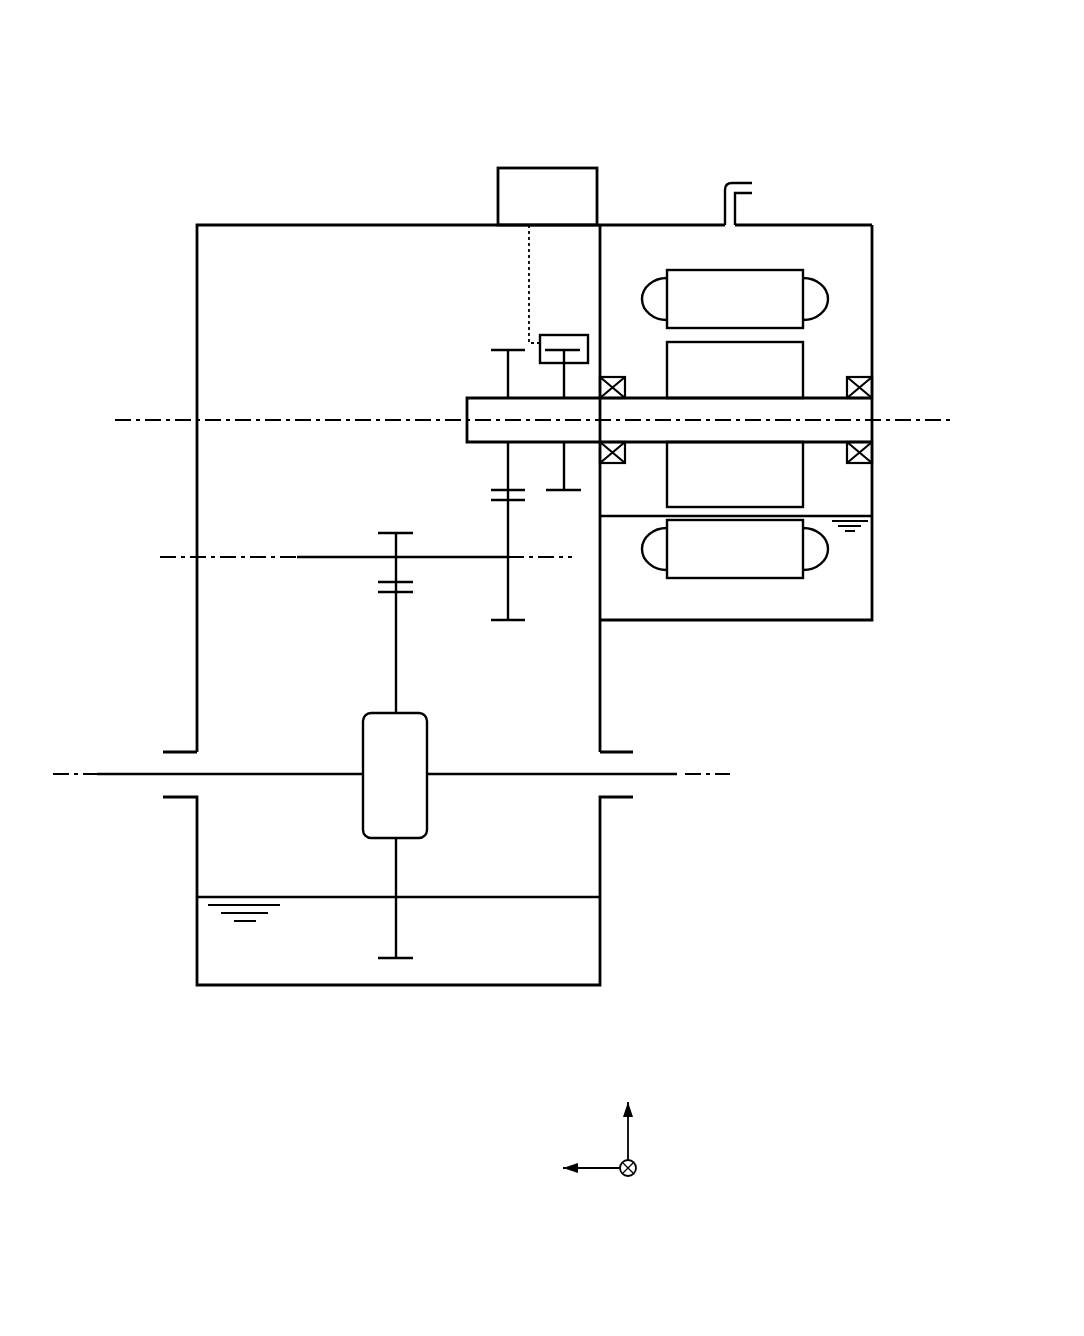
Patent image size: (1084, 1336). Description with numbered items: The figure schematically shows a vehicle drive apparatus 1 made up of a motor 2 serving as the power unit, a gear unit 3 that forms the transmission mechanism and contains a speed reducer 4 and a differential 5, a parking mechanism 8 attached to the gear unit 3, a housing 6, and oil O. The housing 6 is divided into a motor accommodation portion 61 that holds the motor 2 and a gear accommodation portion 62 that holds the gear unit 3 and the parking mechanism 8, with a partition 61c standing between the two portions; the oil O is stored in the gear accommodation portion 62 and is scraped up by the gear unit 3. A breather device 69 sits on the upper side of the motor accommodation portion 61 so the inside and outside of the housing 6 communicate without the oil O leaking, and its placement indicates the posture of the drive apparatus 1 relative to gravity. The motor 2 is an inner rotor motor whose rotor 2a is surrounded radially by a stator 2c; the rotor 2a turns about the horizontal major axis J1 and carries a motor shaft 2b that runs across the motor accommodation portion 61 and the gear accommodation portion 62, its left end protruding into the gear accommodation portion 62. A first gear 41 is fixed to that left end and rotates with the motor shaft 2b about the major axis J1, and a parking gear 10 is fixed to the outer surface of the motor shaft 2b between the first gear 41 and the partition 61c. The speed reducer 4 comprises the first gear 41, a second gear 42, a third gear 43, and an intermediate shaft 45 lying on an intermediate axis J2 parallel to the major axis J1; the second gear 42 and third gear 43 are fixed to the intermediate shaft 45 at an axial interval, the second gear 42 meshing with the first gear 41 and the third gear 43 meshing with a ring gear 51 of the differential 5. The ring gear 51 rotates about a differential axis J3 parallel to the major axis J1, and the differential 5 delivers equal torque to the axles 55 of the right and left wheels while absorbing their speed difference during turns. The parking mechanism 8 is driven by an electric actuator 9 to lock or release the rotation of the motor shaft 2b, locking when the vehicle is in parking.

The drive apparatus 1 is at (849, 103).
The motor 2 is at (848, 675).
The rotor 2a is at (808, 475).
The motor shaft 2b is at (822, 397).
The stator 2c is at (830, 553).
The gear unit 3 is at (325, 288).
The speed reducer 4 is at (368, 408).
The differential 5 is at (487, 835).
The housing 6 is at (600, 124).
The parking mechanism 8 is at (522, 330).
The electric actuator 9 is at (572, 168).
The parking gear 10 is at (575, 493).
The first gear 41 is at (500, 374).
The second gear 42 is at (508, 595).
The third gear 43 is at (397, 567).
The intermediate shaft 45 is at (455, 557).
The ring gear 51 is at (393, 873).
The axles 55 is at (133, 778).
The motor accommodation portion 61 is at (805, 222).
The partition 61c is at (600, 273).
The gear accommodation portion 62 is at (570, 222).
The breather device 69 is at (724, 206).
The major axis J1 is at (908, 418).
The intermediate axis J2 is at (243, 560).
The differential axis J3 is at (73, 778).
The oil O is at (813, 594).